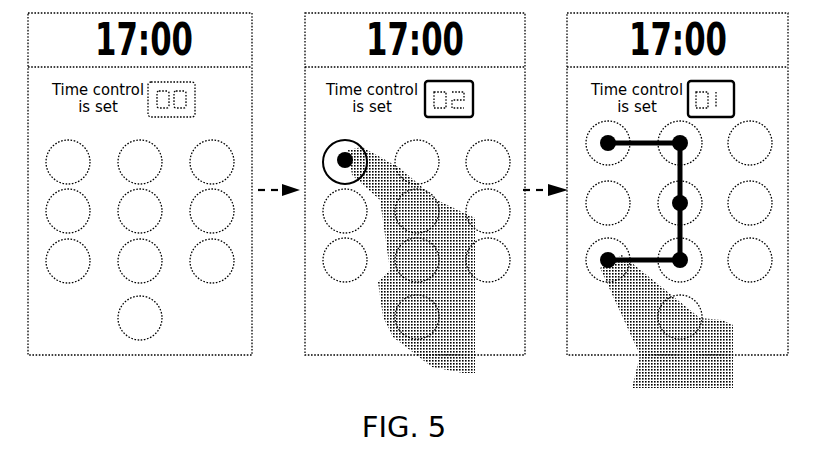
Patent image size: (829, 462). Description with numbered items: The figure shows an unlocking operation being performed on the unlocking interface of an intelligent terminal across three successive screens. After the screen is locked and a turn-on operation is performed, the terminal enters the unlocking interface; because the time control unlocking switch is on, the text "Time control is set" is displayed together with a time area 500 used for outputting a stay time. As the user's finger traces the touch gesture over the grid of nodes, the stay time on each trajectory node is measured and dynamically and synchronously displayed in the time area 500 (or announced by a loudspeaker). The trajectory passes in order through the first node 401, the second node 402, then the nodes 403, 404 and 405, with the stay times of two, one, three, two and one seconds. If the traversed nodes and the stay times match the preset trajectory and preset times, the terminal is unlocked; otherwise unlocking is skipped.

The time area 500 is at (189, 97).
The first node 401 is at (621, 142).
The second node 402 is at (694, 142).
The trajectory node 403 is at (694, 203).
The trajectory node 404 is at (694, 260).
The trajectory node 405 is at (620, 256).